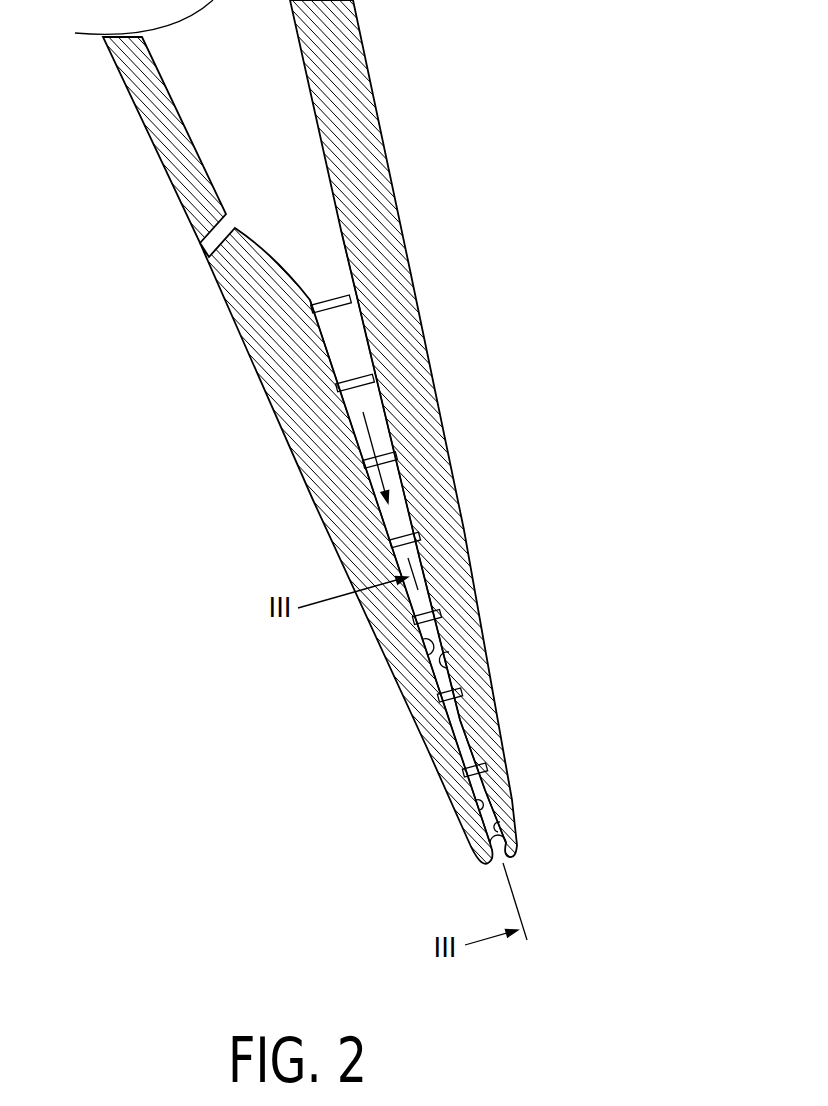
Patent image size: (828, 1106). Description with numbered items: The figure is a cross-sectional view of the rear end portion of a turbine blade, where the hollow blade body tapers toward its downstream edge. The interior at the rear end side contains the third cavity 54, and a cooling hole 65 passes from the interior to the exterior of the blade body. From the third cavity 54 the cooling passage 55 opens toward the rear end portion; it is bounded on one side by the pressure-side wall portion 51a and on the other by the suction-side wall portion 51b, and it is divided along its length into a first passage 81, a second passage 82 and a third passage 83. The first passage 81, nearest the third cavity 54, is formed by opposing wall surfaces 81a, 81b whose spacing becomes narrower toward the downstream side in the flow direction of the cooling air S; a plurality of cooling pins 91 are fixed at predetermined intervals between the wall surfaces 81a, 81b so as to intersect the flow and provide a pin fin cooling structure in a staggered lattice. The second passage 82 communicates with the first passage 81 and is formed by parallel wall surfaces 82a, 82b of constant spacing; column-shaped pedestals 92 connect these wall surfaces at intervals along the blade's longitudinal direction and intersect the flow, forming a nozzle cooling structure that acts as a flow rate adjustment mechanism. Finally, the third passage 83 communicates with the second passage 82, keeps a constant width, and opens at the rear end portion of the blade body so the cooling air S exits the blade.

The pressure-side wall portion 51a is at (333, 478).
The suction-side wall portion 51b is at (437, 517).
The third cavity 54 is at (226, 103).
The cooling passage 55 is at (367, 343).
The cooling hole 65 is at (209, 250).
The first passage 81 is at (340, 333).
The wall surface 81a is at (424, 658).
The wall surface 81b is at (458, 663).
The second passage 82 is at (497, 812).
The wall surface 82a is at (492, 851).
The wall surface 82b is at (498, 848).
The third passage 83 is at (510, 864).
The cooling pin 91 is at (325, 298).
The pedestal 92 is at (477, 812).
The cooling air S is at (372, 433).